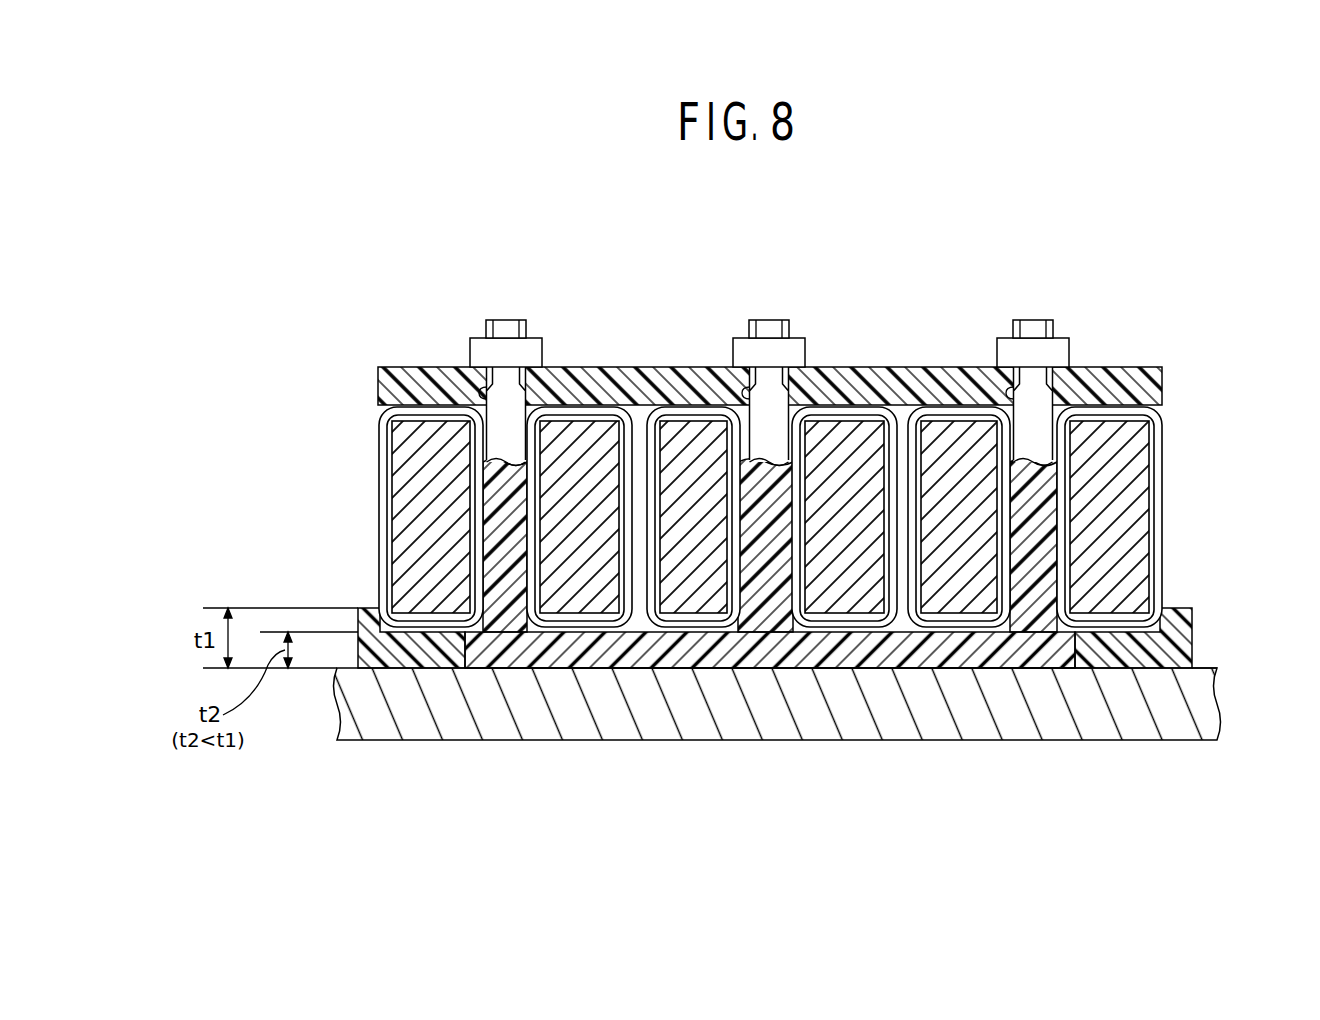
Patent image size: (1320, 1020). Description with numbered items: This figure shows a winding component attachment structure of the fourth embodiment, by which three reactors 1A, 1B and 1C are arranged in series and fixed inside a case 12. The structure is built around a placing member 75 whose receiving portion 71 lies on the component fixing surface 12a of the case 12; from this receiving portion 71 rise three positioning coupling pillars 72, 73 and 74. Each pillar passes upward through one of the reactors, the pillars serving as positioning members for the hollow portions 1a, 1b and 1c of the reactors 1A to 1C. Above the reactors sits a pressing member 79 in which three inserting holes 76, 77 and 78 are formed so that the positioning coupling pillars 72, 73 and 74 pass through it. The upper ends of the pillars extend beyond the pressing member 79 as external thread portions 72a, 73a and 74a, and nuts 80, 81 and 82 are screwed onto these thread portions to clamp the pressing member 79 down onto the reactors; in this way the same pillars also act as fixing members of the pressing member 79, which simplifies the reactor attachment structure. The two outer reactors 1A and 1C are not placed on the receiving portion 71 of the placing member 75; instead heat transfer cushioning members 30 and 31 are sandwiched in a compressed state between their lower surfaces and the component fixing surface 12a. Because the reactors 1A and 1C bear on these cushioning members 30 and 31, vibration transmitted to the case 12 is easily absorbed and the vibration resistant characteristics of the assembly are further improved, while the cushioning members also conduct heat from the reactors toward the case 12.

The case 12 is at (1185, 700).
The component fixing surface 12a is at (1197, 668).
The heat transfer cushioning member 30 is at (392, 660).
The heat transfer cushioning member 31 is at (1128, 660).
The receiving portion 71 is at (763, 663).
The placing member 75 is at (942, 670).
The hollow portion 1a is at (482, 543).
The hollow portion 1b is at (765, 540).
The hollow portion 1c is at (1025, 555).
The pressing member 79 is at (1148, 367).
The positioning coupling pillar 72 is at (503, 433).
The external thread portion 72a is at (523, 328).
The nut 80 is at (482, 353).
The inserting hole 76 is at (485, 397).
The positioning coupling pillar 73 is at (767, 433).
The external thread portion 73a is at (786, 328).
The nut 81 is at (745, 353).
The inserting hole 77 is at (747, 397).
The positioning coupling pillar 74 is at (1033, 433).
The external thread portion 74a is at (1050, 328).
The nut 82 is at (1008, 353).
The inserting hole 78 is at (1018, 397).
The reactor 1A is at (427, 476).
The reactor 1B is at (698, 445).
The reactor 1C is at (1113, 477).